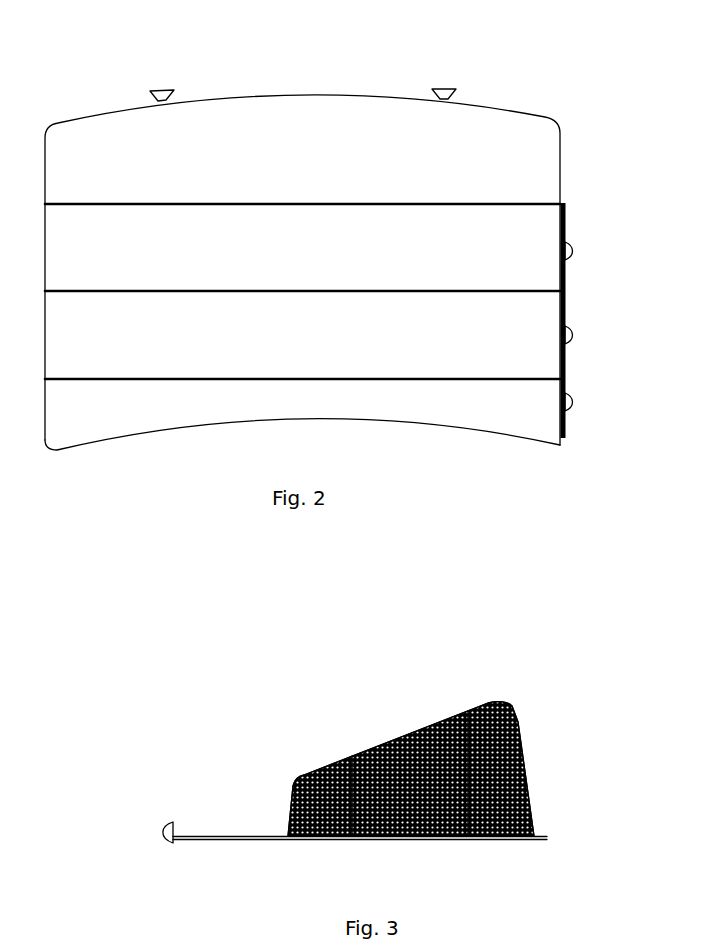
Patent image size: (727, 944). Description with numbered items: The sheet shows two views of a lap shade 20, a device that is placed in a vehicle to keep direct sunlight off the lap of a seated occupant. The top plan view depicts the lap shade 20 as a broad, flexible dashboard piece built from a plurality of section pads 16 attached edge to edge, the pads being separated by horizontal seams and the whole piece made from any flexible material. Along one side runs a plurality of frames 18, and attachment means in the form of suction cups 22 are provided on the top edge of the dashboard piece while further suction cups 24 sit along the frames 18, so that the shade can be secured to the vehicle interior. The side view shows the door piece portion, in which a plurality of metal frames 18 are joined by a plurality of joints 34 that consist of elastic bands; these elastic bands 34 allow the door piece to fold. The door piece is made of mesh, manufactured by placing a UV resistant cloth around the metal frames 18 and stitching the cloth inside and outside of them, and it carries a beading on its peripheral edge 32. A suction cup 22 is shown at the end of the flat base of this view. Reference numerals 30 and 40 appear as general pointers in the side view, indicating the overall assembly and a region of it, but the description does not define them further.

In FIG. 2, the section pad 16 is at (73, 439).
In FIG. 3, the section pad 16 is at (360, 838).
In FIG. 2, the metal frame 18 is at (567, 428).
In FIG. 3, the metal frame 18 is at (529, 769).
In FIG. 2, the lap shade 20 is at (522, 62).
In FIG. 2, the suction cup 22 is at (443, 88).
In FIG. 3, the suction cup 22 is at (164, 838).
In FIG. 2, the suction cup 24 is at (571, 334).
In FIG. 3, the suction cup 24 is at (327, 760).
In FIG. 3, the assembly (FIG. 3) 30 is at (547, 680).
In FIG. 3, the peripheral edge 32 is at (445, 715).
In FIG. 3, the joint 34 is at (376, 735).
In FIG. 3, the arrow / direction indicator 40 is at (577, 932).